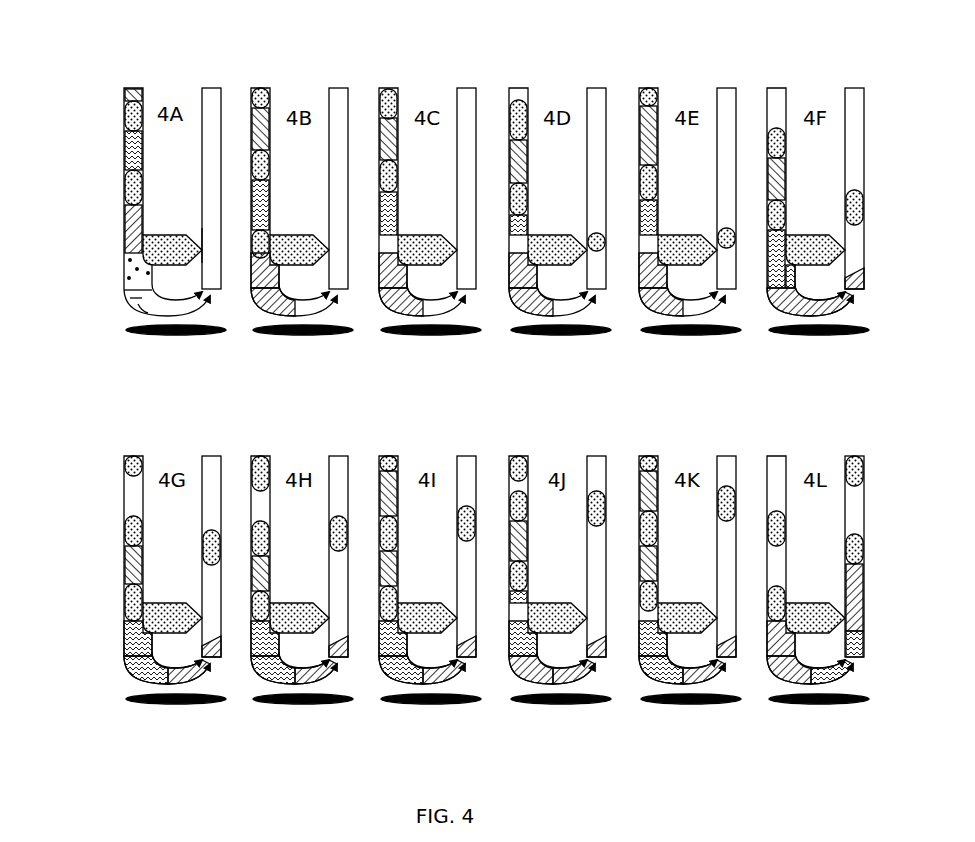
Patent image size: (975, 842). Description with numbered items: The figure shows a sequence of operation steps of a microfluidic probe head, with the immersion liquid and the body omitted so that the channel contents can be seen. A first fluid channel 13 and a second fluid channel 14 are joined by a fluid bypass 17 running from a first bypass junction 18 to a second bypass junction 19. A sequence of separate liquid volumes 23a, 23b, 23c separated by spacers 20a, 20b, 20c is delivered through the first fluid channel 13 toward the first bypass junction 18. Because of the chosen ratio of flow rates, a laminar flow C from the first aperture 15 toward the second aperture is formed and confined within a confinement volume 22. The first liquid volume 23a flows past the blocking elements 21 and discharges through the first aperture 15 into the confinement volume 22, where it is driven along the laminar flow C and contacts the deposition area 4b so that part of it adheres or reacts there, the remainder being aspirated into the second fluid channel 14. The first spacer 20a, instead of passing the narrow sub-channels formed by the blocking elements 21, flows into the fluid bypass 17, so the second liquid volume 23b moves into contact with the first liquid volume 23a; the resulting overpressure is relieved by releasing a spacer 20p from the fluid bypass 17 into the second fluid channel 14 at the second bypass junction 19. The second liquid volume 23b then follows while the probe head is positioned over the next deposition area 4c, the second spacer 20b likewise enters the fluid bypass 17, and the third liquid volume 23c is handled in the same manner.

The first fluid channel 13 is at (140, 151).
The second fluid channel 14 is at (199, 152).
The first aperture 15 is at (165, 282).
The fluid bypass 17 is at (172, 212).
The first bypass junction 18 is at (121, 278).
The second bypass junction 19 is at (226, 225).
The first spacer 20a is at (89, 187).
The second spacer 20b is at (89, 116).
The spacer 20c is at (392, 93).
The spacer 20p is at (857, 208).
The blocking elements 21 is at (83, 289).
The confinement volume 22 is at (90, 320).
The first liquid volume 23a is at (124, 233).
The second liquid volume 23b is at (126, 163).
The third liquid volume 23c is at (81, 81).
The laminar flow C is at (104, 335).
The deposition area 4b is at (132, 336).
The next deposition area 4c is at (132, 705).